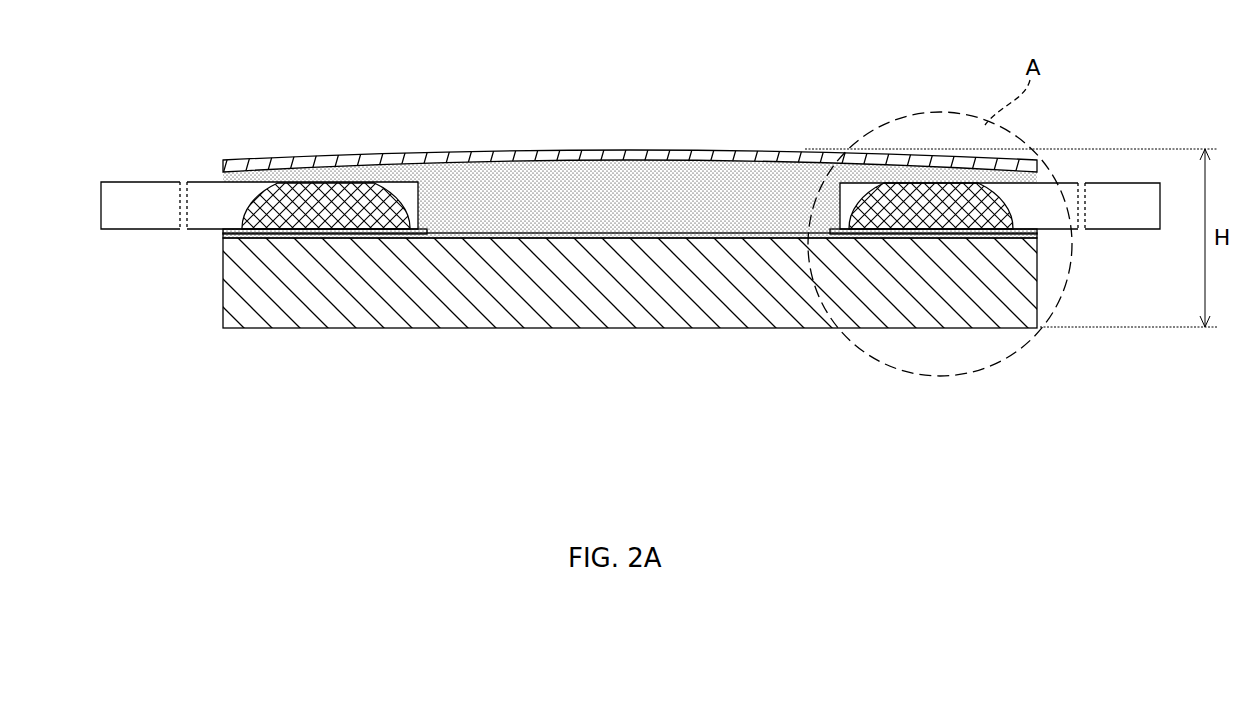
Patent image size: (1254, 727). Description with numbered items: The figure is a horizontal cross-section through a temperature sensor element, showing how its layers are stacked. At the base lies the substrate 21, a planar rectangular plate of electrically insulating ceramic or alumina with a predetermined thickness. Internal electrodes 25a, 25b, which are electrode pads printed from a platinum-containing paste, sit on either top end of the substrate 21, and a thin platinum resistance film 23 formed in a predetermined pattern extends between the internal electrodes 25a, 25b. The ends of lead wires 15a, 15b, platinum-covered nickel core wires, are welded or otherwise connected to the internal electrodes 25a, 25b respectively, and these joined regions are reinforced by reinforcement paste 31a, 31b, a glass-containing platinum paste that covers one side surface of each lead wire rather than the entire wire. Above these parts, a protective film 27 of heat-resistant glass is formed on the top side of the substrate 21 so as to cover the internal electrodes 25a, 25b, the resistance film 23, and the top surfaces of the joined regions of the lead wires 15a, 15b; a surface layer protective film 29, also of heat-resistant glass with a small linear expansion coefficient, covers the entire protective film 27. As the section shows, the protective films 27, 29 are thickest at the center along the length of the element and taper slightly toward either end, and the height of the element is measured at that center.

The lead wire 15a is at (1140, 215).
The lead wire 15b is at (148, 196).
The substrate 21 is at (625, 312).
The resistance film 23 is at (522, 233).
The internal electrode 25a is at (1037, 233).
The internal electrode 25b is at (223, 233).
The protective film 27 is at (695, 170).
The surface layer protective film 29 is at (586, 150).
The reinforcement paste 31a is at (925, 182).
The reinforcement paste 31b is at (316, 185).